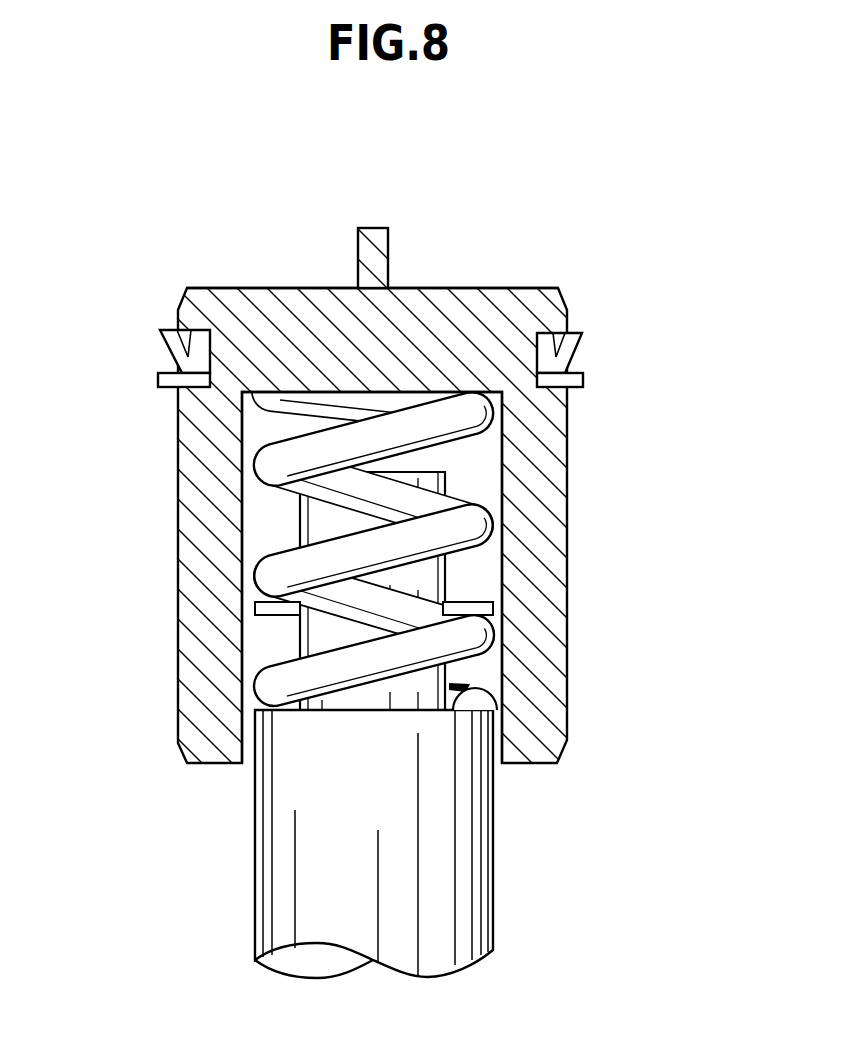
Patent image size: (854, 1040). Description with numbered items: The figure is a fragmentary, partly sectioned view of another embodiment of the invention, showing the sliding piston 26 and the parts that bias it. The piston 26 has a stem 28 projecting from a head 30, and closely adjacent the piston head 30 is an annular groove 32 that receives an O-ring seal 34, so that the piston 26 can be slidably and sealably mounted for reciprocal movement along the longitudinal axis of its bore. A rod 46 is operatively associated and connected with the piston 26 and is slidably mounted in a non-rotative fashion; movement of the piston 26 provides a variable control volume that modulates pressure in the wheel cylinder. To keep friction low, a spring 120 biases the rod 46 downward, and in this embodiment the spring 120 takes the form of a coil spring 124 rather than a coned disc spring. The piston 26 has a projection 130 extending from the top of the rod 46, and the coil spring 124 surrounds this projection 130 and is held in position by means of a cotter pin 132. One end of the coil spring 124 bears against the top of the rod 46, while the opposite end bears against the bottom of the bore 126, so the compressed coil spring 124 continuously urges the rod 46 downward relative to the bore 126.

The piston 26 is at (566, 508).
The stem 28 is at (388, 250).
The head 30 is at (507, 292).
The annular groove 32 is at (573, 367).
The O-ring seal 34 is at (572, 343).
The rod 46 is at (493, 847).
The spring 120 is at (488, 505).
The coil spring 124 is at (272, 491).
The bore 126 is at (503, 567).
The projection 130 is at (463, 678).
The cotter pin 132 is at (264, 614).